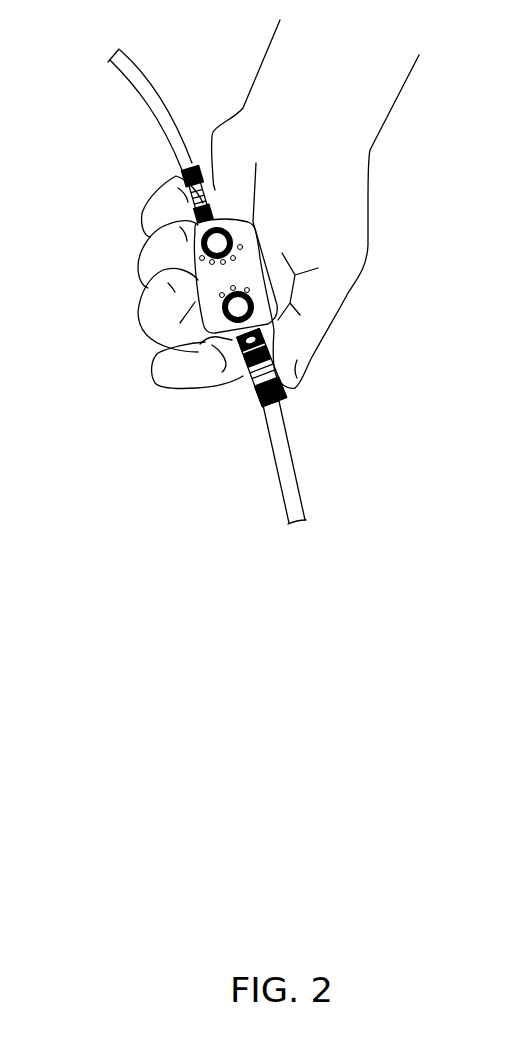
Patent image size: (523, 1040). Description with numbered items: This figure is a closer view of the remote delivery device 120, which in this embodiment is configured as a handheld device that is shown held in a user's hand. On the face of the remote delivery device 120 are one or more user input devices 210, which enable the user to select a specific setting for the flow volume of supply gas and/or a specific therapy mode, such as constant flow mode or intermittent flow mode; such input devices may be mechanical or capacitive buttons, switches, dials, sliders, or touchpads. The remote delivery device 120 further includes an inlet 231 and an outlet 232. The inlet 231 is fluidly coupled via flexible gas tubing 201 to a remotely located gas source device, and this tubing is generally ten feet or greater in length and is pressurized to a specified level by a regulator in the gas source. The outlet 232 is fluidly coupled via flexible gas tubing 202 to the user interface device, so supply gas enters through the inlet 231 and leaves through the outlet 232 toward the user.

The remote delivery device 120 is at (231, 294).
The flexible gas tubing 201 is at (292, 458).
The flexible gas tubing 202 is at (150, 107).
The user input devices 210 is at (228, 205).
The inlet 231 is at (255, 397).
The outlet 232 is at (212, 175).